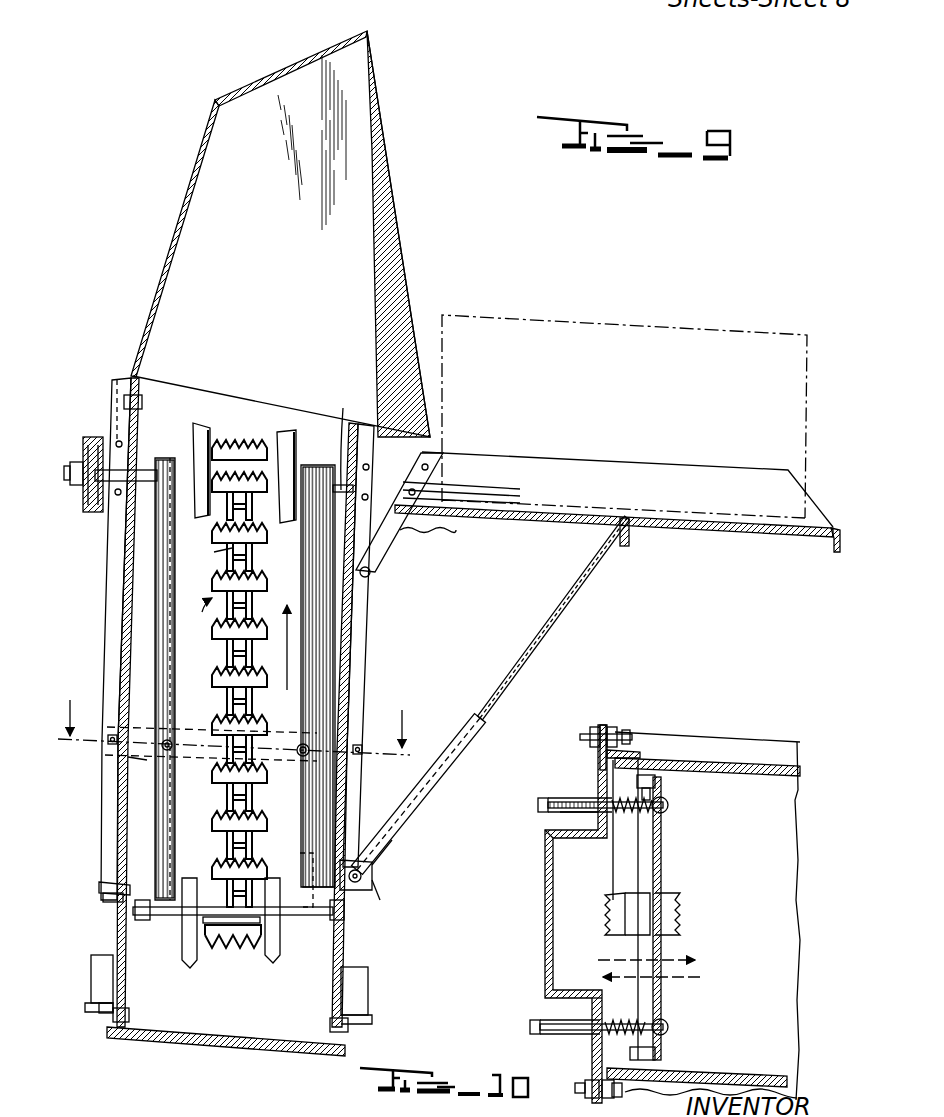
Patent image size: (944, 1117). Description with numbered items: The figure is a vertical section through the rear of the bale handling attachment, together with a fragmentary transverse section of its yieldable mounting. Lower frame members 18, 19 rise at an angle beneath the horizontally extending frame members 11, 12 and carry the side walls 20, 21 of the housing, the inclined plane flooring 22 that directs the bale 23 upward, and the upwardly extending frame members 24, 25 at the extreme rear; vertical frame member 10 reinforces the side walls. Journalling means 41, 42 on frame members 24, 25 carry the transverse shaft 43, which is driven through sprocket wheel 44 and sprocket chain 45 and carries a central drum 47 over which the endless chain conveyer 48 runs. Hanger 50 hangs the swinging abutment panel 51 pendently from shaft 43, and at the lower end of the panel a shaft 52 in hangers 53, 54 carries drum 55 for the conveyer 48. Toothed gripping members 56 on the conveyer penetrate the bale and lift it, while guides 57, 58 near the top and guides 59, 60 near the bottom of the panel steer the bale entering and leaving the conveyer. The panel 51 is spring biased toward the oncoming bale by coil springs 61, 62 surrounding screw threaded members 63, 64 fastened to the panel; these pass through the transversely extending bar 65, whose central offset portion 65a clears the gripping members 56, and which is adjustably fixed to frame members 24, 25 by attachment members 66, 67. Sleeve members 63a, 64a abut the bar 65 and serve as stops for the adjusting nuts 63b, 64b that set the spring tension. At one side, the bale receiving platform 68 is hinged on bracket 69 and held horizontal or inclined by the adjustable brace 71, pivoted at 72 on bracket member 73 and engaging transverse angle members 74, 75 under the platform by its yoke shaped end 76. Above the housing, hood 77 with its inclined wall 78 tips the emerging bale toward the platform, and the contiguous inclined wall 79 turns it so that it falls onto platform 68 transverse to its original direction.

In FIG. 9, the vertically extending frame member 10 is at (248, 716).
In FIG. 9, the horizontally extending frame member 11 is at (362, 910).
In FIG. 9, the horizontally extending frame member 12 is at (133, 905).
In FIG. 9, the lower frame member 18 is at (368, 985).
In FIG. 9, the lower frame member 19 is at (92, 975).
In FIG. 9, the side wall 20 is at (128, 626).
In FIG. 10, the side wall 20 is at (735, 1072).
In FIG. 9, the side wall 21 is at (352, 640).
In FIG. 10, the side wall 21 is at (740, 758).
In FIG. 9, the inclined plane flooring 22 is at (208, 1045).
In FIG. 9, the bale 23 is at (665, 325).
In FIG. 10, the upwardly extending frame member 24 is at (612, 1100).
In FIG. 10, the upwardly extending frame member 25 is at (610, 728).
In FIG. 9, the journalling means 41 is at (378, 465).
In FIG. 9, the journalling means 42 is at (122, 397).
In FIG. 9, the transverse shaft 43 is at (158, 470).
In FIG. 9, the sprocket wheel 44 is at (112, 505).
In FIG. 9, the sprocket chain 45 is at (100, 432).
In FIG. 9, the drum 47 is at (243, 450).
In FIG. 9, the endless chain conveyer 48 is at (228, 644).
In FIG. 9, the hanger 50 is at (155, 520).
In FIG. 9, the swinging abutment panel 51 is at (155, 845).
In FIG. 10, the swinging abutment panel 51 is at (662, 862).
In FIG. 9, the shaft 52 is at (100, 985).
In FIG. 9, the hanger 53 is at (310, 860).
In FIG. 9, the hanger 54 is at (99, 888).
In FIG. 9, the drum 55 is at (238, 955).
In FIG. 10, the drum 55 is at (640, 900).
In FIG. 9, the gripping member 56 is at (230, 552).
In FIG. 10, the gripping member 56 is at (685, 912).
In FIG. 9, the guide 57 is at (208, 440).
In FIG. 9, the guide 58 is at (290, 432).
In FIG. 9, the guide 59 is at (187, 965).
In FIG. 9, the guide 60 is at (277, 962).
In FIG. 10, the coil spring 61 is at (645, 815).
In FIG. 10, the coil spring 62 is at (645, 1015).
In FIG. 9, the screw threaded member 63 is at (303, 742).
In FIG. 10, the screw threaded member 63 is at (668, 805).
In FIG. 10, the sleeve member 63a is at (590, 820).
In FIG. 10, the adjusting nut 63b is at (580, 810).
In FIG. 9, the screw threaded member 64 is at (170, 738).
In FIG. 10, the screw threaded member 64 is at (670, 1030).
In FIG. 10, the sleeve member 64a is at (580, 1032).
In FIG. 10, the adjusting nut 64b is at (560, 995).
In FIG. 9, the transversely extending bar 65 is at (130, 770).
In FIG. 10, the transversely extending bar 65 is at (597, 770).
In FIG. 10, the offset portion 65a is at (545, 925).
In FIG. 9, the screw threaded adjustable attachment member 66 is at (362, 742).
In FIG. 10, the screw threaded adjustable attachment member 66 is at (642, 750).
In FIG. 9, the screw threaded adjustable attachment member 67 is at (108, 745).
In FIG. 10, the screw threaded adjustable attachment member 67 is at (625, 1090).
In FIG. 9, the bale receiving platform 68 is at (565, 528).
In FIG. 9, the bracket 69 is at (445, 541).
In FIG. 9, the adjustable brace 71 is at (484, 735).
In FIG. 9, the pivot 72 is at (372, 885).
In FIG. 9, the bracket member 73 is at (385, 850).
In FIG. 9, the transverse angle member 74 is at (630, 540).
In FIG. 9, the transverse angle member 75 is at (835, 553).
In FIG. 9, the yoke shaped end 76 is at (560, 605).
In FIG. 9, the hood 77 is at (365, 262).
In FIG. 9, the inclined wall 78 is at (177, 212).
In FIG. 9, the contiguous inclined wall 79 is at (275, 65).